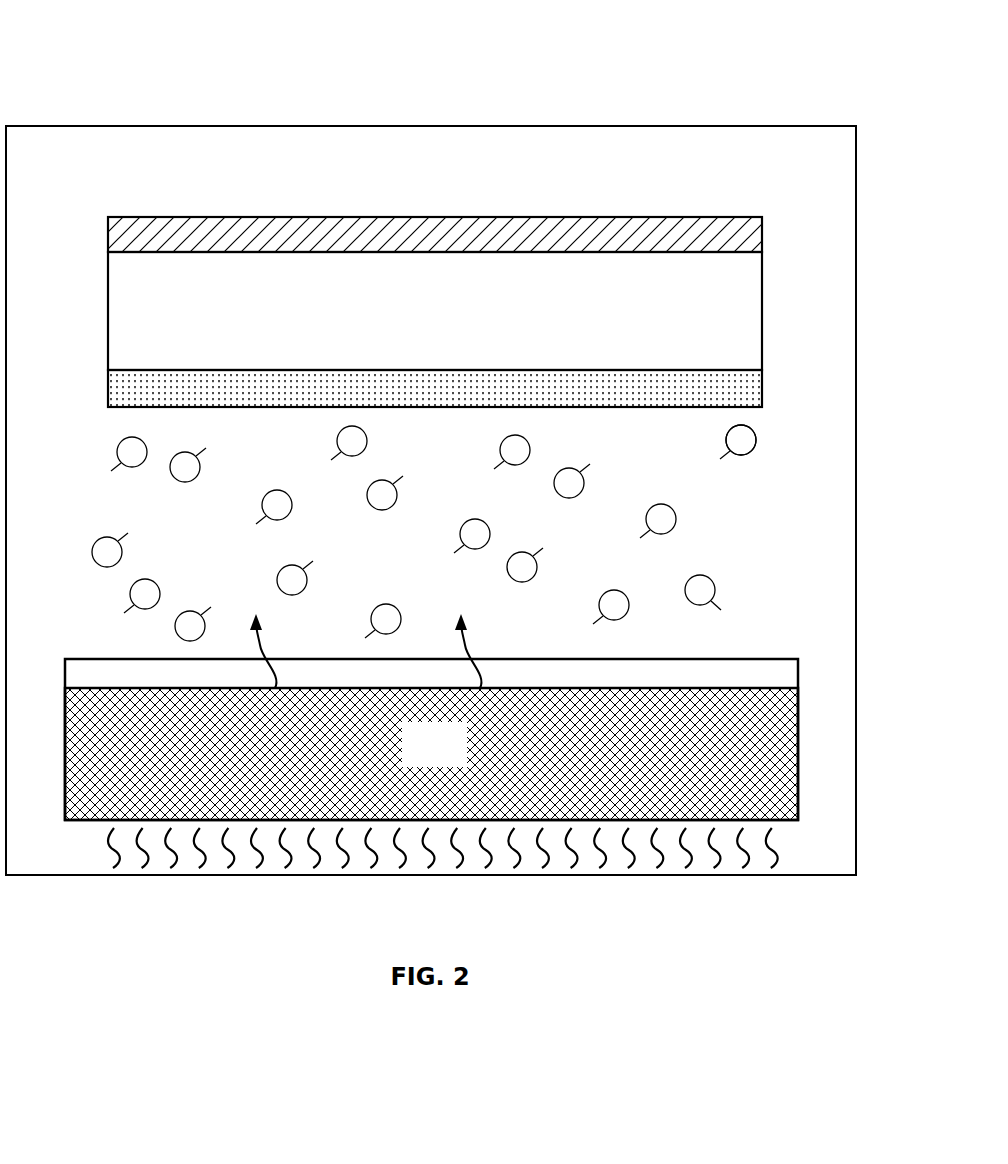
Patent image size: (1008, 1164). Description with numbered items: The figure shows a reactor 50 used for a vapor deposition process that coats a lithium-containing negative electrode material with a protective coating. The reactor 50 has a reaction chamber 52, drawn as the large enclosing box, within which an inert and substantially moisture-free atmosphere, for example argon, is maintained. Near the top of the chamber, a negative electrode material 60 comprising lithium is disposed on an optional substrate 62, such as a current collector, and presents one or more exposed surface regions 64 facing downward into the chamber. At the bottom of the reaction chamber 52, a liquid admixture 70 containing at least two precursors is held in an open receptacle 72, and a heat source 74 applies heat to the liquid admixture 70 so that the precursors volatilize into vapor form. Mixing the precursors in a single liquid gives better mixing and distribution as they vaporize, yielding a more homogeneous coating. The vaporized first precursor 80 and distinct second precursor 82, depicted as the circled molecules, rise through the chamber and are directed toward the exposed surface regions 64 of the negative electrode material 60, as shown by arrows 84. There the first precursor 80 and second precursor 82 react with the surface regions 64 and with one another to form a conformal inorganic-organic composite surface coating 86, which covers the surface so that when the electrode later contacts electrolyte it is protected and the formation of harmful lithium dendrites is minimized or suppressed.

The reactor 50 is at (77, 66).
The reaction chamber 52 is at (856, 518).
The negative electrode material 60 is at (435, 311).
The substrate 62 is at (318, 217).
The exposed surface regions 64 is at (126, 404).
The liquid admixture 70 is at (431, 739).
The open receptacle 72 is at (800, 745).
The heat source 74 is at (779, 861).
The first precursor 80 is at (703, 575).
The second precursor 82 is at (757, 447).
The arrows 84 is at (470, 652).
The inorganic-organic composite surface coating 86 is at (766, 386).